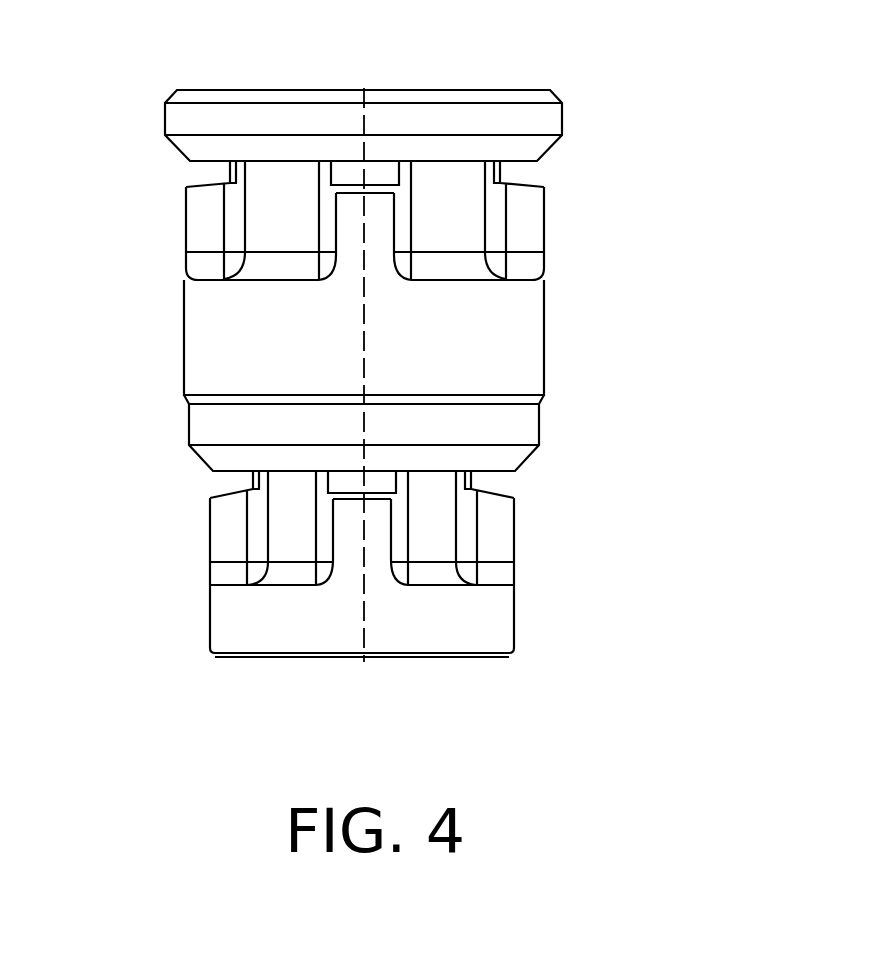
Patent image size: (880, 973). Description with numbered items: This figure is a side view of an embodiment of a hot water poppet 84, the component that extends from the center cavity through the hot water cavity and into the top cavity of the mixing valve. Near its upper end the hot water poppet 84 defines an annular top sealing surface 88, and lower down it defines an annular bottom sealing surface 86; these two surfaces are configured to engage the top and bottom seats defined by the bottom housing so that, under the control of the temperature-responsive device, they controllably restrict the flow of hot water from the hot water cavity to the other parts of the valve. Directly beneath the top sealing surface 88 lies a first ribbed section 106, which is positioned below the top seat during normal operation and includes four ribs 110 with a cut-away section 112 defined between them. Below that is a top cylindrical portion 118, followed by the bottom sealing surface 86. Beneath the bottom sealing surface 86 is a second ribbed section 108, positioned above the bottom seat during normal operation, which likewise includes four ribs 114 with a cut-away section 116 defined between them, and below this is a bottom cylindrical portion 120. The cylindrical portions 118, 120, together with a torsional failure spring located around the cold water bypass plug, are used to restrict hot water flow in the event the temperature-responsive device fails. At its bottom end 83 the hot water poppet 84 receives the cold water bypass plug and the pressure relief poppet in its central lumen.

The bottom end 83 is at (362, 619).
The hot water poppet 84 is at (703, 120).
The annular bottom sealing surface 86 is at (531, 454).
The annular top sealing surface 88 is at (552, 152).
The ribbed section 106 is at (352, 275).
The ribbed section 108 is at (362, 603).
The ribs 110 is at (525, 234).
The cut-away section 112 is at (293, 232).
The ribs 114 is at (492, 531).
The cut-away section 116 is at (291, 540).
The top cylindrical portion 118 is at (513, 370).
The bottom cylindrical portion 120 is at (505, 634).